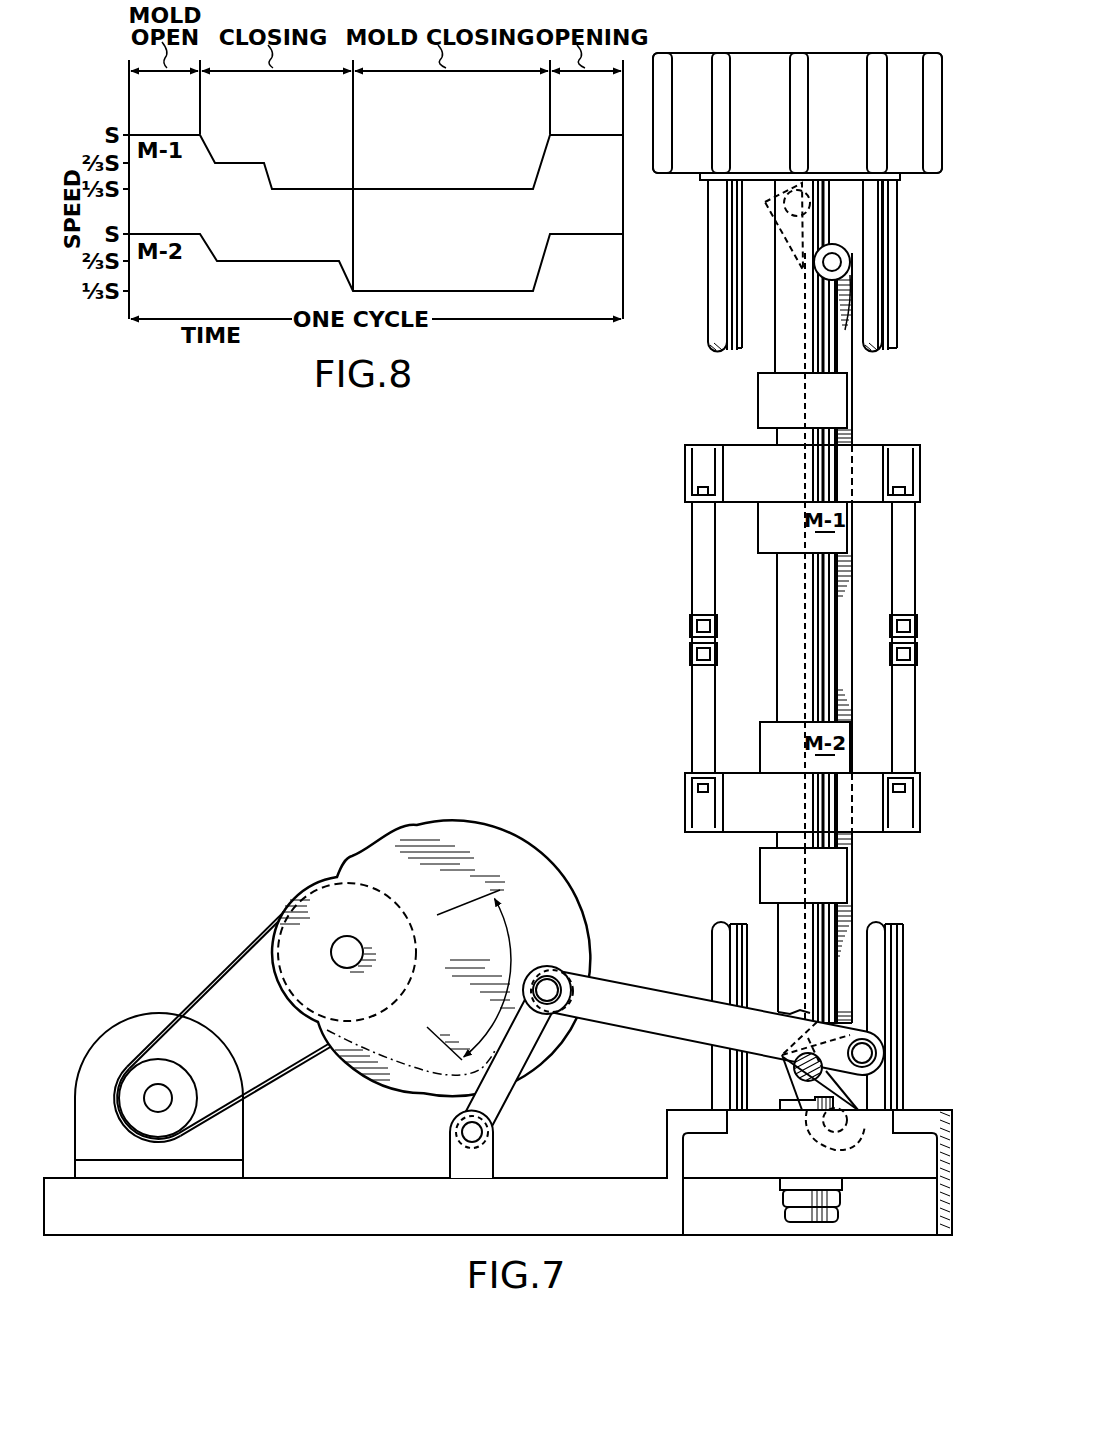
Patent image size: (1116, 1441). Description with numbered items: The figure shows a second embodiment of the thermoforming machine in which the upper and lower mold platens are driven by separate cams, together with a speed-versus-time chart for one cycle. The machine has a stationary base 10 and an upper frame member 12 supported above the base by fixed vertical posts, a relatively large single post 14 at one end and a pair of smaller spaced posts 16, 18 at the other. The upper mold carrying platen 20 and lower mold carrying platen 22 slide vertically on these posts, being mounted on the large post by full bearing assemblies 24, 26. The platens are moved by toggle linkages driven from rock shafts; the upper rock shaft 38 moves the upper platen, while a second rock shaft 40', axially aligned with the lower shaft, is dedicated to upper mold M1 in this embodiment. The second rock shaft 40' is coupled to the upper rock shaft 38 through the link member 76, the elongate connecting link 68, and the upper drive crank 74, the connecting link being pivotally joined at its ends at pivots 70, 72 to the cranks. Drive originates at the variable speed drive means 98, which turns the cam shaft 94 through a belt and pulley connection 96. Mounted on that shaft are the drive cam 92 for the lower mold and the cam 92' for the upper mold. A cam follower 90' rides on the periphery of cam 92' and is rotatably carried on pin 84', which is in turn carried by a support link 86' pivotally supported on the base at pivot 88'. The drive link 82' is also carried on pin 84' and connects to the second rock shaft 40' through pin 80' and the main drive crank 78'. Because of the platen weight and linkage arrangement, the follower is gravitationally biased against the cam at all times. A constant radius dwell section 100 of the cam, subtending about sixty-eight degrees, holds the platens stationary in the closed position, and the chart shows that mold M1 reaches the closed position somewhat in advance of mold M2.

The stationary base 10 is at (663, 1160).
The upper frame member 12 is at (740, 50).
The post 14 is at (776, 626).
The post 16 is at (712, 950).
The post 18 is at (880, 967).
The upper mold carrying platen 20 is at (922, 483).
The lower mold carrying platen 22 is at (922, 795).
The full bearing assembly 24 is at (752, 379).
The full bearing assembly 26 is at (758, 836).
The upper rock shaft 38 is at (785, 190).
The second rock shaft 40' is at (744, 1063).
The connecting link 68 is at (845, 630).
The pivot connection 70 is at (873, 258).
The pivot connection 72 is at (855, 1148).
The upper drive crank 74 is at (833, 238).
The drive crank 76 is at (859, 1082).
The main drive crank 78' is at (798, 1064).
The pivot pin 80' is at (896, 1049).
The drive link 82' is at (713, 1022).
The pivot pin 84' is at (574, 972).
The support link 86' is at (518, 1061).
The base pivot 88' is at (499, 1145).
The cam follower 90' is at (548, 960).
The drive cam 92 is at (411, 1087).
The cam 92' is at (431, 965).
The cam shaft 94 is at (348, 946).
The belt and pulley connection 96 is at (232, 960).
The variable speed drive means 98 is at (122, 1020).
The constant radius dwell section 100 is at (497, 922).